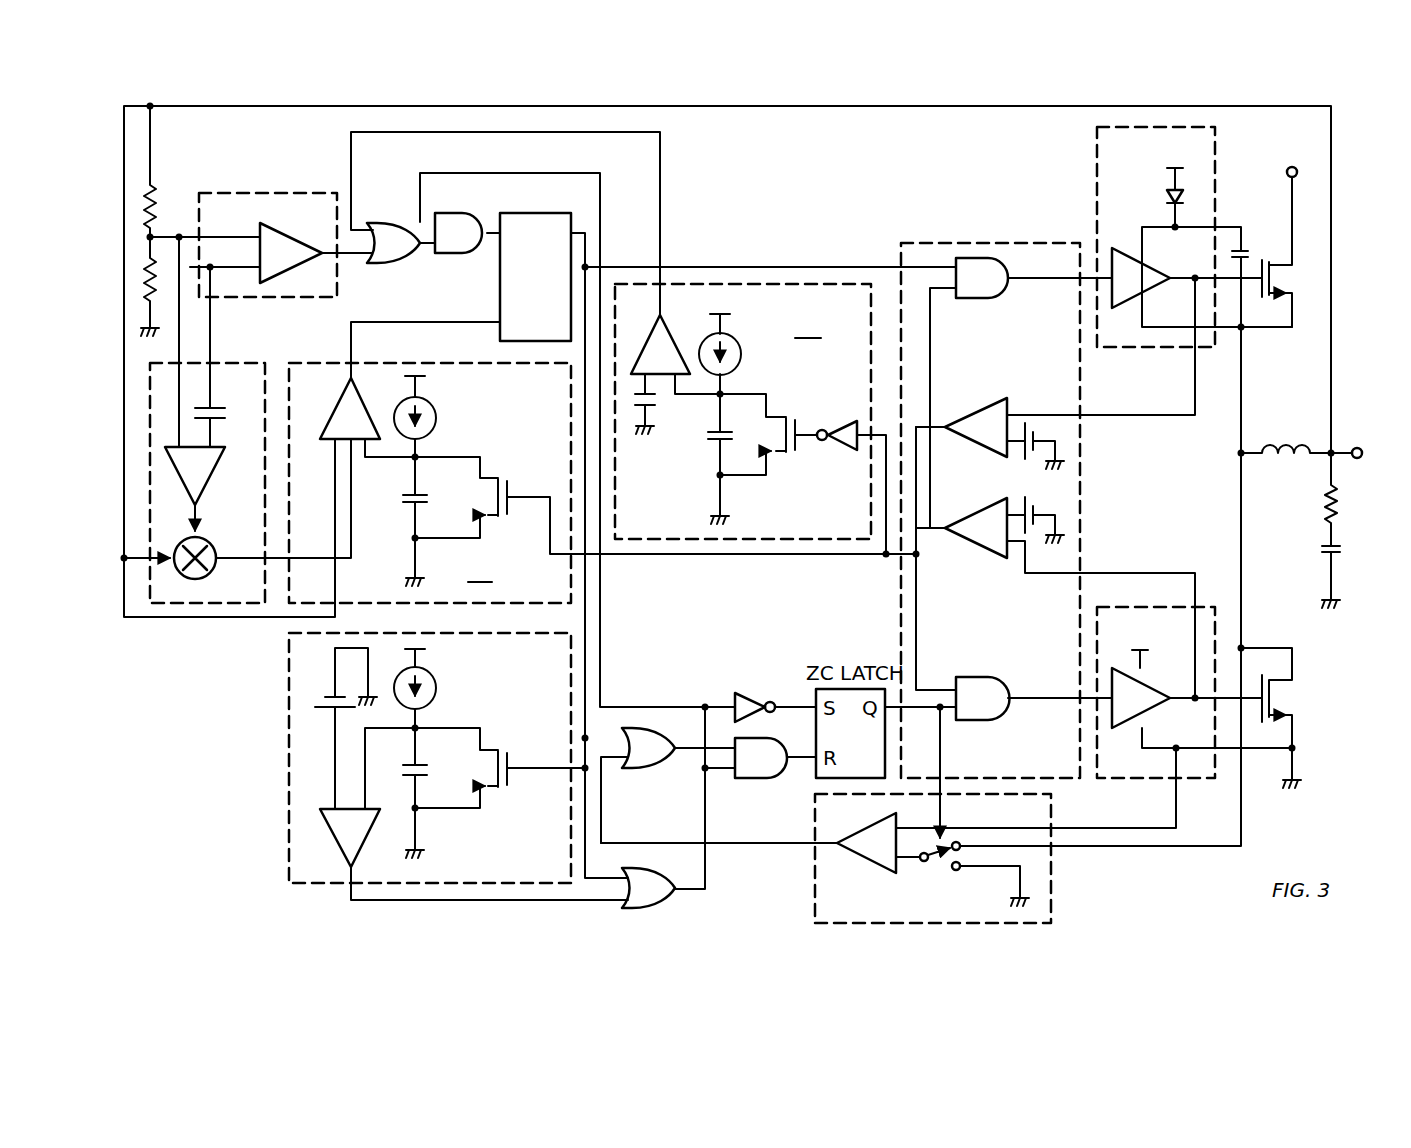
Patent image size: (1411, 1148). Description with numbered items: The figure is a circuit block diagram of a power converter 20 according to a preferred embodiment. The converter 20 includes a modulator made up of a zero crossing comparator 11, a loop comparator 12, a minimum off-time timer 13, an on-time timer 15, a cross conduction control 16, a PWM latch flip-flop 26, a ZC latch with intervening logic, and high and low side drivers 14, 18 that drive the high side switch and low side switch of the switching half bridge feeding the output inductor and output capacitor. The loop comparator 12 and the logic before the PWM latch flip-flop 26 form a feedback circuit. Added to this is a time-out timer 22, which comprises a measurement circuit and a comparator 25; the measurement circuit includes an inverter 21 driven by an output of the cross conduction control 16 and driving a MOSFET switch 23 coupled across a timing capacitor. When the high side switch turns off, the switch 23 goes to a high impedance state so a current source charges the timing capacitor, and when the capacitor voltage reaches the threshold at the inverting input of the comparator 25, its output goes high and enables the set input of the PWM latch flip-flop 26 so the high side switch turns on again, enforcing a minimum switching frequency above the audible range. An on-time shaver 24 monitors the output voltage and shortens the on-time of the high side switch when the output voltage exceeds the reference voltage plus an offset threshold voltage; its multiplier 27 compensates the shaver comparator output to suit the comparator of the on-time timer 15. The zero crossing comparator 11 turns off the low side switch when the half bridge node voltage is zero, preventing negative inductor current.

The zero crossing comparator 11 is at (1056, 878).
The loop comparator 12 is at (258, 190).
The minimum off-time timer 13 is at (287, 767).
The high side driver 14 is at (1094, 170).
The on-time timer 15 is at (602, 483).
The cross conduction control 16 is at (1004, 242).
The low side driver 18 is at (1209, 604).
The circuit block diagram 20 is at (1181, 869).
The inverter 21 is at (843, 425).
The time-out timer 22 is at (750, 419).
The MOSFET switch 23 is at (800, 452).
The on-time shaver 24 is at (237, 420).
The comparator 25 is at (673, 346).
The PWM latch flip-flop 26 is at (498, 278).
The multiplier 27 is at (205, 536).